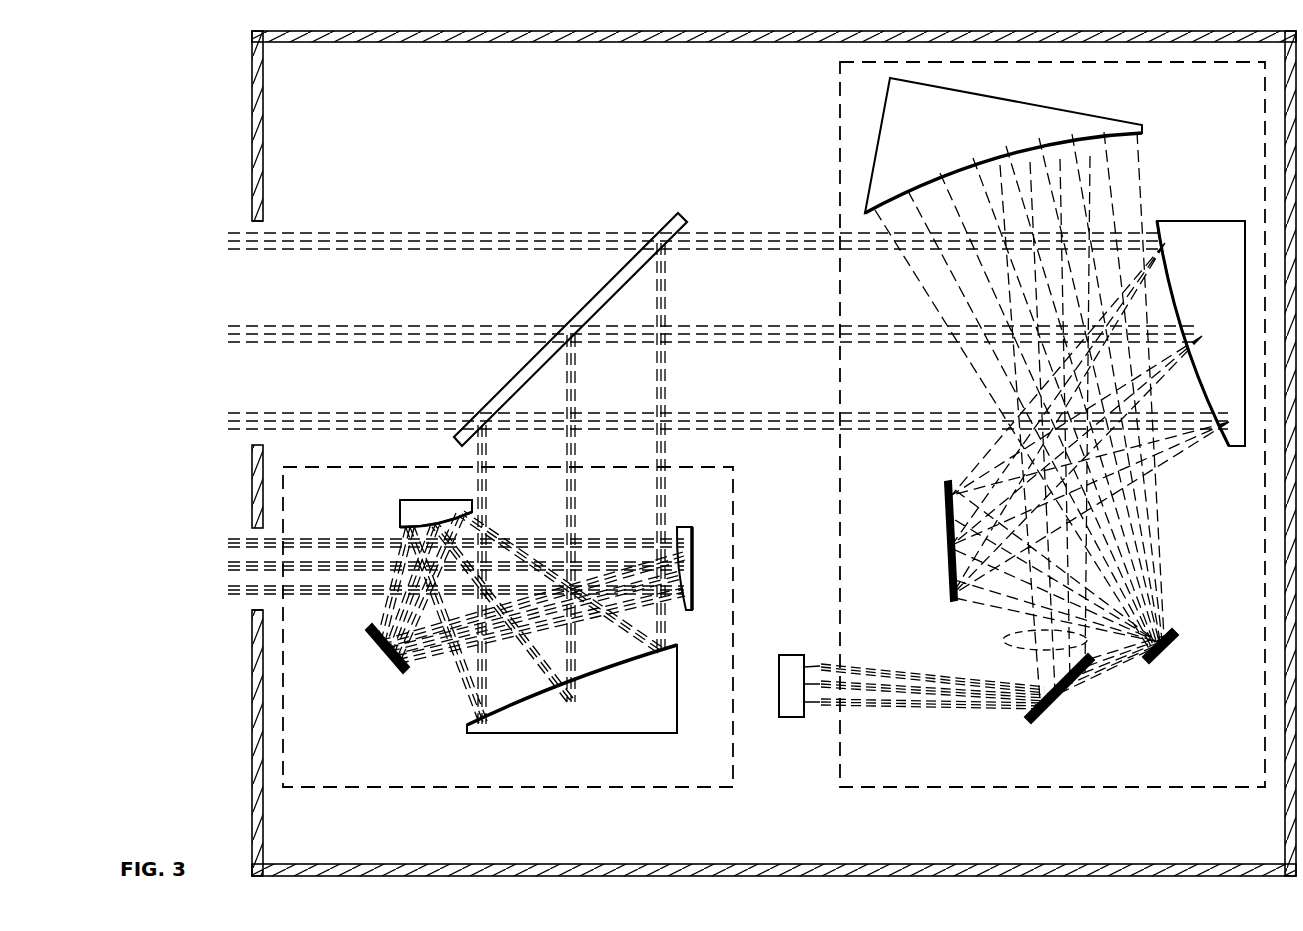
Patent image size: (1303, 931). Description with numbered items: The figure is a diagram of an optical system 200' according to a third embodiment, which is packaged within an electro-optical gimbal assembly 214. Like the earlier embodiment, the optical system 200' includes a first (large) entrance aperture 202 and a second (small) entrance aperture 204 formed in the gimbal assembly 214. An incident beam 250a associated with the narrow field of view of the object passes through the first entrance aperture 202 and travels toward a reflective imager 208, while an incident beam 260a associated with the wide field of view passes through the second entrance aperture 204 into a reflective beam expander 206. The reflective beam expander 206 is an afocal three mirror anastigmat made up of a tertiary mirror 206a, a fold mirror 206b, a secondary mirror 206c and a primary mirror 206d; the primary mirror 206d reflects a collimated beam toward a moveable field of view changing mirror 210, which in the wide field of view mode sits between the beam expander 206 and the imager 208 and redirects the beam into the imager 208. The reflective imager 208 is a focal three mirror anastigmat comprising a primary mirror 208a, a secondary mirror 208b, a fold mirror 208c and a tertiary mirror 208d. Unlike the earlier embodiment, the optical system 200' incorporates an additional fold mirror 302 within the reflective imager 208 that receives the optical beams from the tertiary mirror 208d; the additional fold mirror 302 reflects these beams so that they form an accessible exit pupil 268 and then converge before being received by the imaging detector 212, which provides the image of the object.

The optical system 200' is at (717, 453).
The first (large) entrance aperture 202 is at (258, 222).
The second (small) entrance aperture 204 is at (258, 606).
The reflective beam expander 206 is at (480, 800).
The tertiary mirror 206a is at (685, 527).
The fold mirror 206b is at (378, 652).
The secondary mirror 206c is at (400, 514).
The primary mirror 206d is at (657, 718).
The reflective imager 208 is at (1171, 800).
The primary mirror 208a is at (1200, 220).
The secondary mirror 208b is at (945, 565).
The fold mirror 208c is at (1168, 650).
The tertiary mirror 208d is at (964, 140).
The moveable field of view changing mirror 210 is at (585, 302).
The imaging detector 212 is at (790, 717).
The electro-optical gimbal assembly 214 is at (252, 740).
The incident beam 250a is at (222, 231).
The incident beam 260a is at (222, 534).
The accessible exit pupil 268 is at (951, 686).
The additional fold mirror 302 is at (1055, 705).